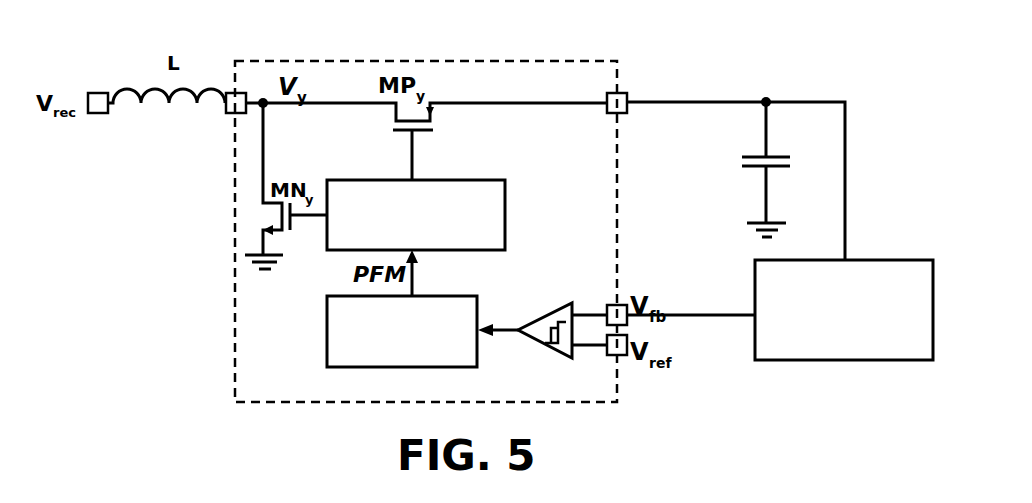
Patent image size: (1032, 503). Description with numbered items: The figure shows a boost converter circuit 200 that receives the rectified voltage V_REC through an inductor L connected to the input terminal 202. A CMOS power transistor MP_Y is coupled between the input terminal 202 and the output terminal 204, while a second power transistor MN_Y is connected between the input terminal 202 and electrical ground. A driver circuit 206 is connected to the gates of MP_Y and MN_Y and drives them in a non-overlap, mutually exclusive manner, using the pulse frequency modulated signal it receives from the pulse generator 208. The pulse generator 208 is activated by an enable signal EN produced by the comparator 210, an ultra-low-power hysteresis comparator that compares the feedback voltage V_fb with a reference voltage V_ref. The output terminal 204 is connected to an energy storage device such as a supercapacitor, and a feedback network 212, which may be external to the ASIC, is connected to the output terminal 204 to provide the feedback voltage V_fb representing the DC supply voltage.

The boost converter circuit 200 is at (556, 60).
The input terminal 202 is at (235, 93).
The output terminal 204 is at (622, 93).
The driver circuit 206 is at (449, 180).
The pulse generator 208 is at (327, 340).
The comparator 210 is at (547, 347).
The feedback network 212 is at (869, 260).